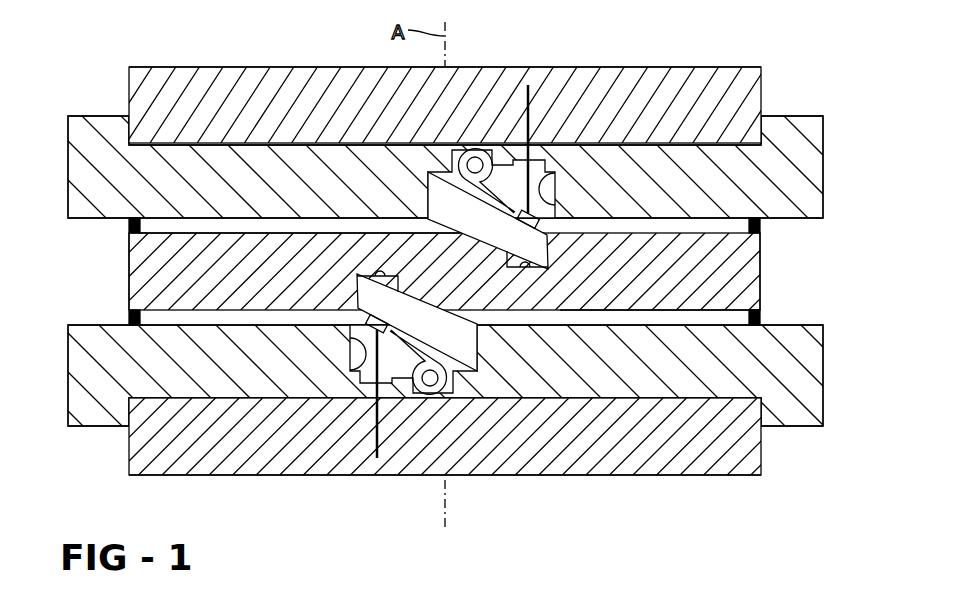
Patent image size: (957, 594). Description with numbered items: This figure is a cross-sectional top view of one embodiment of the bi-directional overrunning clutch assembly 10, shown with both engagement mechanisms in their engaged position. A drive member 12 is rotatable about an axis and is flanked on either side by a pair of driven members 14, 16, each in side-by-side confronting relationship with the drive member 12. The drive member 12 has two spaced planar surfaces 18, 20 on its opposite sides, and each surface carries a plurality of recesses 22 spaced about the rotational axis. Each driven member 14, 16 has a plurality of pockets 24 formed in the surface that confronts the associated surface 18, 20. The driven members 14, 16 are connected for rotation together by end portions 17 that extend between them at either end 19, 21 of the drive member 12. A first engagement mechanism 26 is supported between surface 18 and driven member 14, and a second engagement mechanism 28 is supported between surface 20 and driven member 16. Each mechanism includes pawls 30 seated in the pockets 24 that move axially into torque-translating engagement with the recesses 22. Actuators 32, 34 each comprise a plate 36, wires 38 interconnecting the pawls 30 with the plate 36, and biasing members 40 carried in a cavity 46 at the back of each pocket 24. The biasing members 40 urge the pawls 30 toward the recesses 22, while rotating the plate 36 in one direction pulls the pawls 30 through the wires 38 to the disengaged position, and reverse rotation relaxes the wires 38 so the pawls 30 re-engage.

The bi-directional overrunning clutch assembly 10 is at (87, 44).
The drive member 12 is at (208, 226).
The driven member 14 is at (829, 175).
The driven member 16 is at (836, 385).
The end portions 17 is at (127, 232).
The planar surface 18 is at (278, 237).
The end of the drive member 19 is at (127, 277).
The planar surface 20 is at (650, 307).
The end of the drive member 21 is at (762, 248).
The recesses 22 is at (383, 274).
The pockets 24 is at (566, 192).
The first engagement mechanism 26 is at (392, 181).
The second engagement mechanism 28 is at (502, 379).
The pawls 30 is at (478, 230).
The actuator 32 is at (282, 62).
The actuator 34 is at (664, 482).
The plate 36 is at (658, 80).
The wires 38 is at (530, 104).
The biasing members 40 is at (502, 152).
The cavity 46 is at (465, 147).